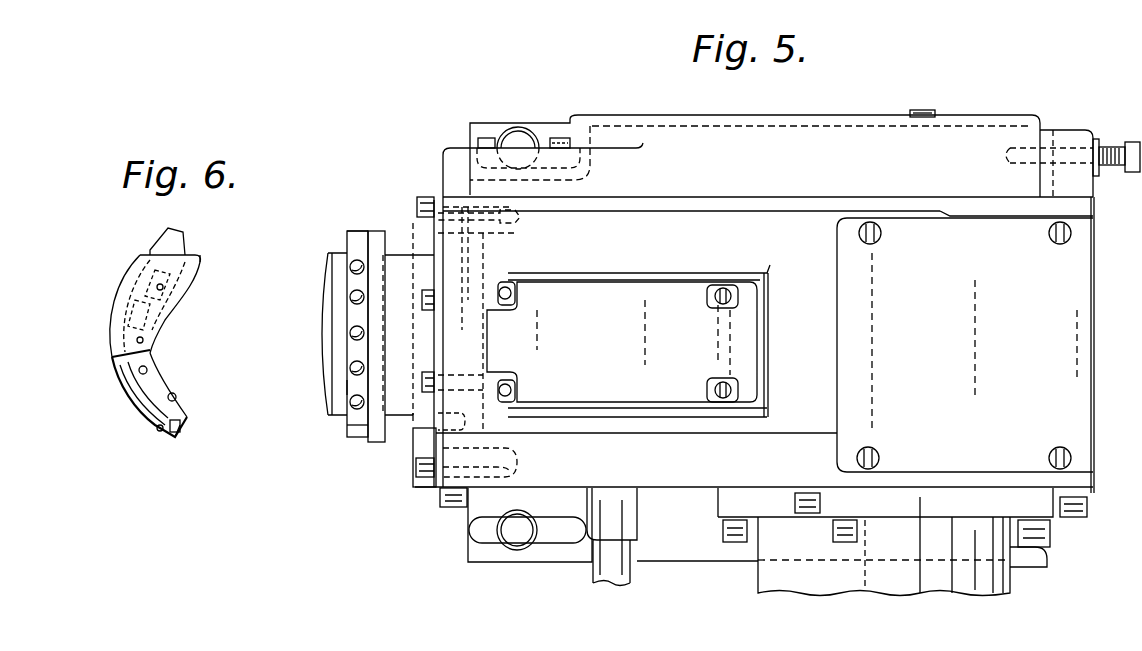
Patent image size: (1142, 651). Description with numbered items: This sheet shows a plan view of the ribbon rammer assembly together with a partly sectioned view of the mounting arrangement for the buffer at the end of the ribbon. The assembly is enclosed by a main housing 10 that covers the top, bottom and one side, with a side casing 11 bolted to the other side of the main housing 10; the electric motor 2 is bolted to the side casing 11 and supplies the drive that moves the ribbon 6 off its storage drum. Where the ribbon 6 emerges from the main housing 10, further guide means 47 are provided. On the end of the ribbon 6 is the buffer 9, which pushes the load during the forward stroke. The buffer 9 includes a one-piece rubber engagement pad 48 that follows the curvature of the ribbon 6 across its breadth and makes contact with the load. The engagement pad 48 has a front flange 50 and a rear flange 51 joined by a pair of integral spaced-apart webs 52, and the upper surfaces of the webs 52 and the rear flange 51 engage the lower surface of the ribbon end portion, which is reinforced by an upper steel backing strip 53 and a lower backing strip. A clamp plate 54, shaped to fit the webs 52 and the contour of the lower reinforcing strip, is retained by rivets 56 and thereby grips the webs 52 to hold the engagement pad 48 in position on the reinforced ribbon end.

In FIG. 5, the electric motor 2 is at (807, 580).
In FIG. 5, the ribbon 6 is at (306, 337).
In FIG. 6, the ribbon 6 is at (185, 423).
In FIG. 5, the buffer 9 is at (355, 210).
In FIG. 6, the buffer 9 is at (160, 229).
In FIG. 5, the main housing 10 is at (726, 198).
In FIG. 5, the side casing 11 is at (602, 460).
In FIG. 5, the guide means 47 is at (416, 203).
In FIG. 5, the rubber engagement pad 48 is at (335, 257).
In FIG. 6, the rubber engagement pad 48 is at (112, 297).
In FIG. 5, the front flange 50 is at (330, 255).
In FIG. 6, the front flange 50 is at (200, 260).
In FIG. 5, the rear flange 51 is at (373, 440).
In FIG. 6, the rear flange 51 is at (150, 407).
In FIG. 6, the webs 52 is at (108, 320).
In FIG. 5, the upper steel backing strip 53 is at (350, 388).
In FIG. 6, the upper steel backing strip 53 is at (155, 385).
In FIG. 5, the clamp plate 54 is at (350, 432).
In FIG. 6, the clamp plate 54 is at (165, 435).
In FIG. 5, the rivets 56 is at (359, 265).
In FIG. 6, the rivets 56 is at (145, 243).